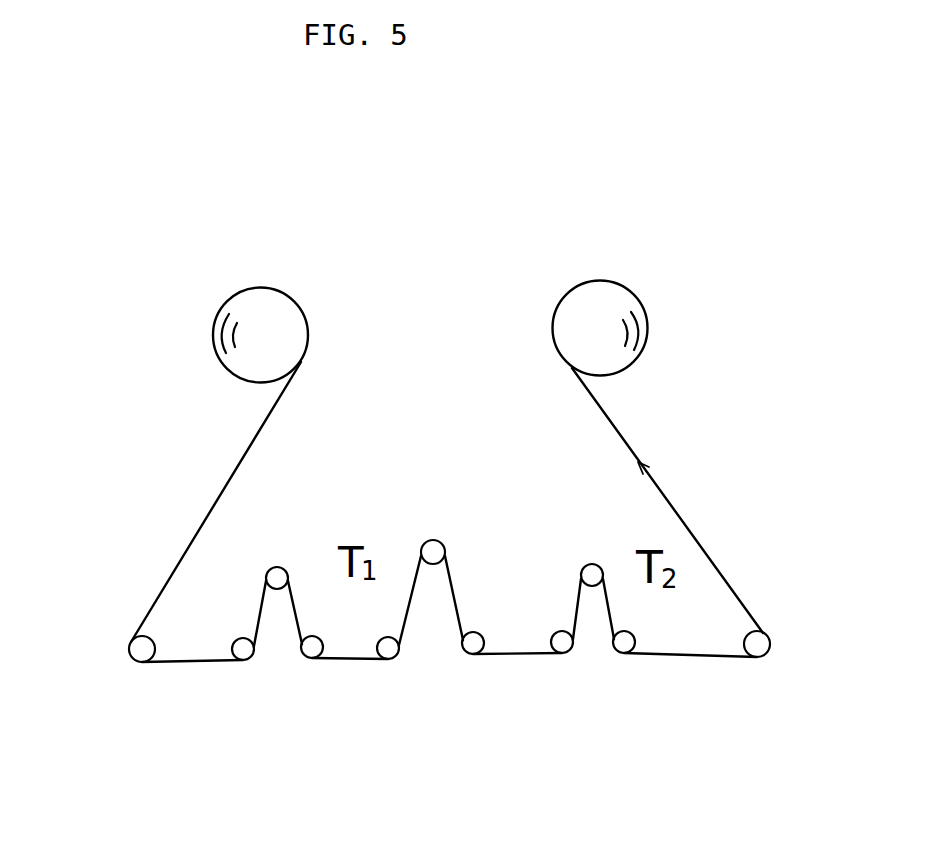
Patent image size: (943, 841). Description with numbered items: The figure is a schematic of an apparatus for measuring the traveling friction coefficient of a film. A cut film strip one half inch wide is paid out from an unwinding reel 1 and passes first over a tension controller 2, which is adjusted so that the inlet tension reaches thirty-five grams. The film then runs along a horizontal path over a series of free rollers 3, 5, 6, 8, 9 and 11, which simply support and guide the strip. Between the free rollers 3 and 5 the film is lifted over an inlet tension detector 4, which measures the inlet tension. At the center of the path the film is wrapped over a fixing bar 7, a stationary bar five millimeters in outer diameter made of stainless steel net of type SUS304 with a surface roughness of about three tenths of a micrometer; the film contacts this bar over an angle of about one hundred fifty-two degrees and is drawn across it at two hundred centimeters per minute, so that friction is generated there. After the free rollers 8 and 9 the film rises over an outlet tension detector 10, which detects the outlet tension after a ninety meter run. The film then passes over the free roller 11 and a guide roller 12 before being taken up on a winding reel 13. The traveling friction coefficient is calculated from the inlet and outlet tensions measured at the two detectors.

The unwinding reel 1 is at (270, 317).
The tension controller 2 is at (132, 658).
The free roller 3 is at (237, 662).
The tension detector (inlet) 4 is at (282, 568).
The free roller 5 is at (307, 657).
The free roller 6 is at (383, 653).
The fixing bar 7 is at (433, 547).
The free roller 8 is at (472, 650).
The free roller 9 is at (568, 652).
The tension detector (outlet) 10 is at (587, 568).
The free roller 11 is at (630, 652).
The guide roller 12 is at (767, 655).
The winding reel 13 is at (602, 317).